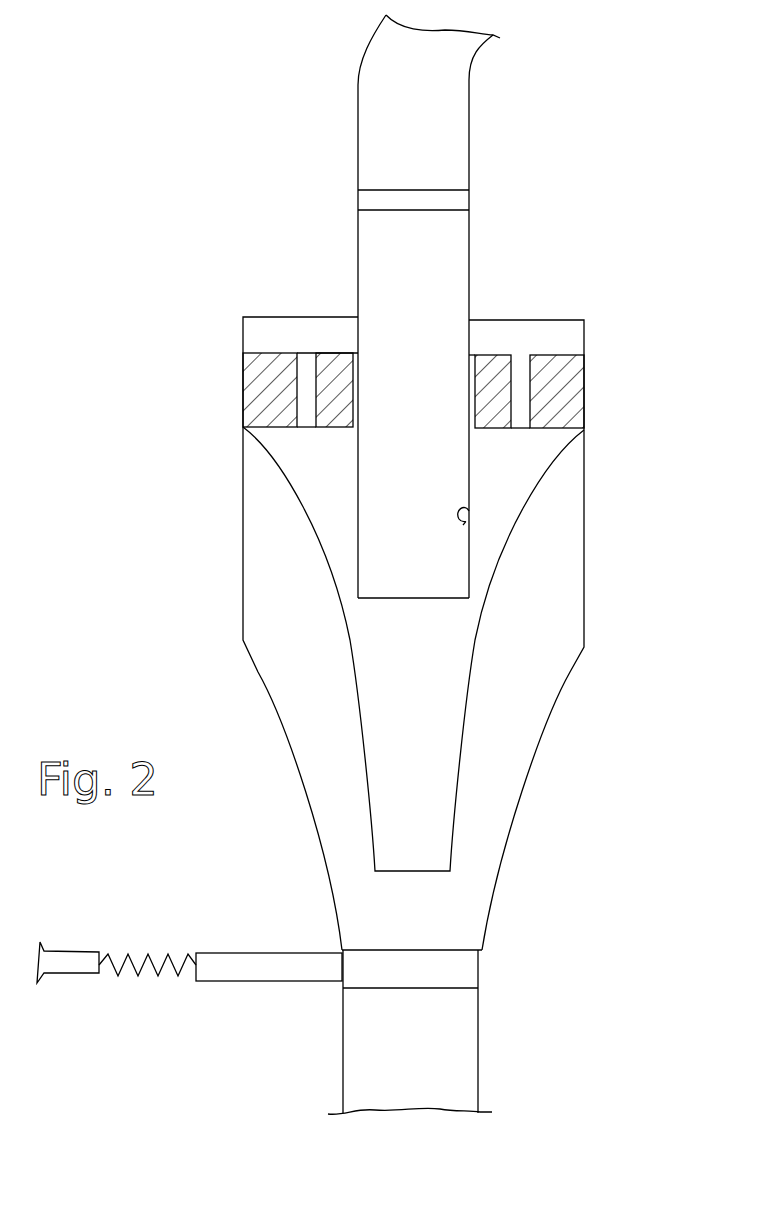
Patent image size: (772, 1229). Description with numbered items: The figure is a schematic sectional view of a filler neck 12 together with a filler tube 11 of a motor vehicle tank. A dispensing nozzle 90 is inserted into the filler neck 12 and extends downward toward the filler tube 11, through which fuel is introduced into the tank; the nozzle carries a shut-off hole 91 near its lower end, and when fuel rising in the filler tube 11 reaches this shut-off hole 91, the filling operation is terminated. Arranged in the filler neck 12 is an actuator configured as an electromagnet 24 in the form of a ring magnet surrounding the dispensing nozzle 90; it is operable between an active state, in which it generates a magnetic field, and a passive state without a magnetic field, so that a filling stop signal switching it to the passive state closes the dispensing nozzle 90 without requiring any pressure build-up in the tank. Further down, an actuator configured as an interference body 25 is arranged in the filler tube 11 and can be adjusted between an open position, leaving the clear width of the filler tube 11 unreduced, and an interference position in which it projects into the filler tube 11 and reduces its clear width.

The dispensing nozzle 90 is at (443, 250).
The filler neck 12 is at (545, 537).
The electromagnet 24 is at (568, 382).
The shut-off hole 91 is at (463, 525).
The filler tube 11 is at (440, 1028).
The interference body 25 is at (247, 968).